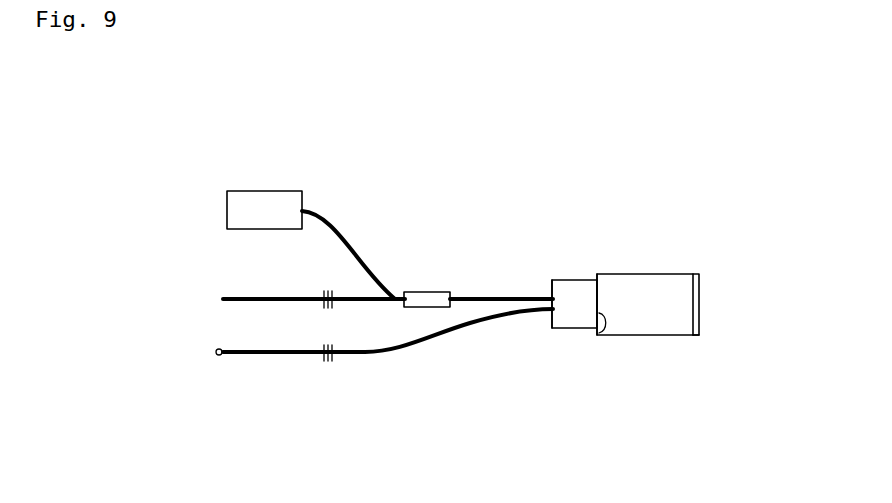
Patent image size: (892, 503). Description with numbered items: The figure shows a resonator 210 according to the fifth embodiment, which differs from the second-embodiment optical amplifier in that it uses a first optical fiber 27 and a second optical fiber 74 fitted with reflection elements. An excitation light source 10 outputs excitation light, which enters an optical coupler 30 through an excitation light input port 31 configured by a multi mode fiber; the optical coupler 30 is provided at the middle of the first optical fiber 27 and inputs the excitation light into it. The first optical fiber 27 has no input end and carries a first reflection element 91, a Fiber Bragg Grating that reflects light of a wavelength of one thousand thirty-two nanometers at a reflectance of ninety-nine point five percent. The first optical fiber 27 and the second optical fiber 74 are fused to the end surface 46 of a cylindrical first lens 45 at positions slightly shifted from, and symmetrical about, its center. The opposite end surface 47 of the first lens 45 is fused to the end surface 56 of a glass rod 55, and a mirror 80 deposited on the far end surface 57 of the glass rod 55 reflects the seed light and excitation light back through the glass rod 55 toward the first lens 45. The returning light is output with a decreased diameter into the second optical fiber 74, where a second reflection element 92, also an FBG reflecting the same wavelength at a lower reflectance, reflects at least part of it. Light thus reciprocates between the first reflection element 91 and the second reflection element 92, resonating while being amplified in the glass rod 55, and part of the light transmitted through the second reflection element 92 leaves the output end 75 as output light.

The resonator 210 is at (698, 188).
The excitation light source 10 is at (287, 207).
The excitation light input port 31 is at (347, 240).
The first reflection element 91 is at (322, 296).
The optical coupler 30 is at (410, 297).
The first optical fiber 27 is at (467, 297).
The output end 75 is at (216, 354).
The second reflection element 92 is at (323, 353).
The second optical fiber 74 is at (370, 353).
The first lens 45 is at (573, 308).
The end surface 46 is at (552, 290).
The glass rod 55 is at (628, 282).
The end surface 56 is at (597, 278).
The end surface 47 is at (599, 333).
The mirror 80 is at (699, 280).
The end surface 57 is at (699, 328).